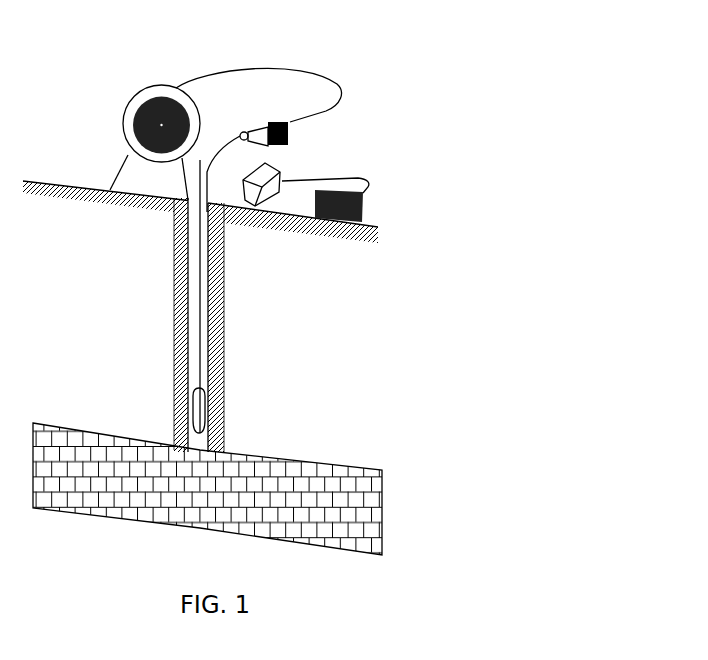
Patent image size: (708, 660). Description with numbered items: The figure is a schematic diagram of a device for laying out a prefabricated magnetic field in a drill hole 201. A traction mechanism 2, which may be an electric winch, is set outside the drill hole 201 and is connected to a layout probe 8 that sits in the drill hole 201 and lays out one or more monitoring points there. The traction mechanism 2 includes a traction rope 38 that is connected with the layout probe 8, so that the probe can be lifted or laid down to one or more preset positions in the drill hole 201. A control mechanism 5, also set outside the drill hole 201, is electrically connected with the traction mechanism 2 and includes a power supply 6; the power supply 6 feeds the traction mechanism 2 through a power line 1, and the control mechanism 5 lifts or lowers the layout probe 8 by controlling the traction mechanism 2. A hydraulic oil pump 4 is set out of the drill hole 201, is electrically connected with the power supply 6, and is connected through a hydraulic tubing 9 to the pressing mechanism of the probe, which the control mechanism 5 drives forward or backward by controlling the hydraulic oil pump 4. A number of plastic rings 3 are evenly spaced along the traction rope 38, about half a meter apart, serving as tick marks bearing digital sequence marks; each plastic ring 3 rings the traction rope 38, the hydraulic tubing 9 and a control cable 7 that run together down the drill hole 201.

The power line 1 is at (220, 73).
The traction mechanism 2 is at (123, 123).
The plastic ring 3 is at (188, 315).
The hydraulic oil pump 4 is at (267, 163).
The control mechanism 5 is at (282, 180).
The power supply 6 is at (345, 235).
The control cable 7 is at (200, 283).
The layout probe 8 is at (207, 420).
The hydraulic tubing 9 is at (240, 133).
The traction rope 38 is at (200, 160).
The drill hole 201 is at (198, 458).